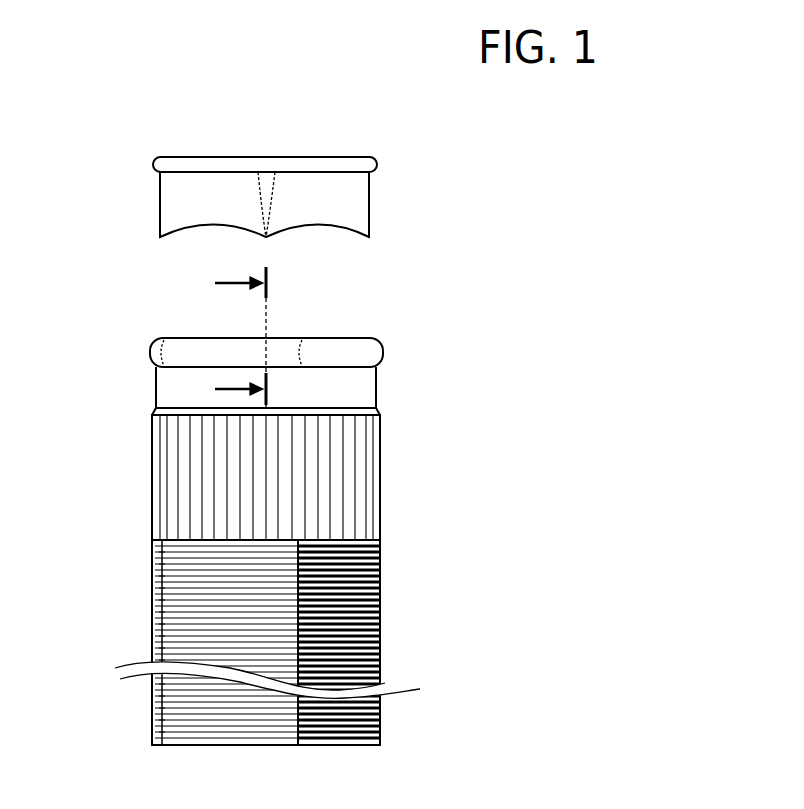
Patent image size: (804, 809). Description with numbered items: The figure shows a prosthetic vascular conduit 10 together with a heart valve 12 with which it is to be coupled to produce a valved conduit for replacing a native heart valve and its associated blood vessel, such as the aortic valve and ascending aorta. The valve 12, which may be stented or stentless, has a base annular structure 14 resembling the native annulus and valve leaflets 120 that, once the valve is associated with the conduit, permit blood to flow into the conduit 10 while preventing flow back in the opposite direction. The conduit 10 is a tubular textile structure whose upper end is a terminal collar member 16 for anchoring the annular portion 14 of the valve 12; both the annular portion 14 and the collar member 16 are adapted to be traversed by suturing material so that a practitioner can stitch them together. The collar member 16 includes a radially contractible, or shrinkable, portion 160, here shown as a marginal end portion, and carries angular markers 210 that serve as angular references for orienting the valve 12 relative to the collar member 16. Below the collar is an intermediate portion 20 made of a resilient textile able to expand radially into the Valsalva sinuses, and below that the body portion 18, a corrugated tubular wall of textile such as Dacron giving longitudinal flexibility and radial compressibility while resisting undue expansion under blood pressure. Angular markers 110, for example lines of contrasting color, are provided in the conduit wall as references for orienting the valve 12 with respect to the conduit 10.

The prosthetic vascular conduit 10 is at (347, 537).
The valve 12 is at (316, 183).
The base annular structure 14 is at (193, 165).
The valve leaflets 120 is at (178, 207).
The terminal collar member 16 is at (155, 380).
The radially contractible portion 160 is at (396, 340).
The angular markers 210 is at (168, 340).
The intermediate portion 20 is at (152, 478).
The body portion 18 is at (195, 600).
The angular markers 110 is at (228, 747).